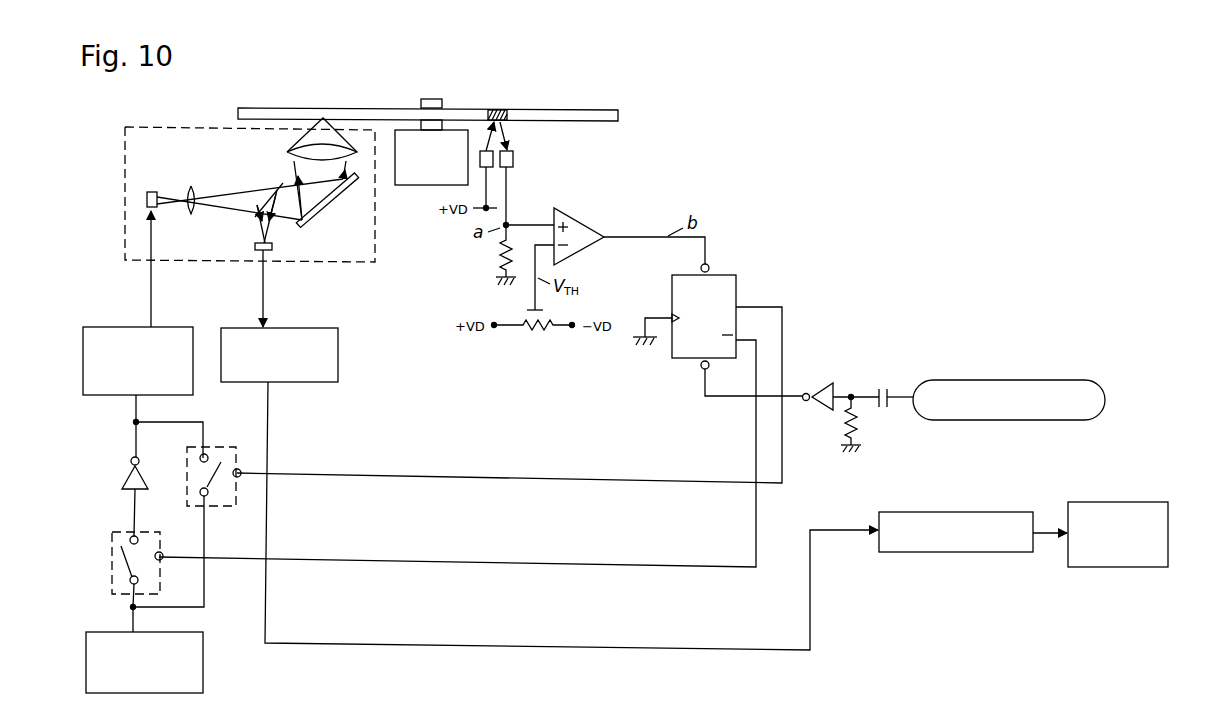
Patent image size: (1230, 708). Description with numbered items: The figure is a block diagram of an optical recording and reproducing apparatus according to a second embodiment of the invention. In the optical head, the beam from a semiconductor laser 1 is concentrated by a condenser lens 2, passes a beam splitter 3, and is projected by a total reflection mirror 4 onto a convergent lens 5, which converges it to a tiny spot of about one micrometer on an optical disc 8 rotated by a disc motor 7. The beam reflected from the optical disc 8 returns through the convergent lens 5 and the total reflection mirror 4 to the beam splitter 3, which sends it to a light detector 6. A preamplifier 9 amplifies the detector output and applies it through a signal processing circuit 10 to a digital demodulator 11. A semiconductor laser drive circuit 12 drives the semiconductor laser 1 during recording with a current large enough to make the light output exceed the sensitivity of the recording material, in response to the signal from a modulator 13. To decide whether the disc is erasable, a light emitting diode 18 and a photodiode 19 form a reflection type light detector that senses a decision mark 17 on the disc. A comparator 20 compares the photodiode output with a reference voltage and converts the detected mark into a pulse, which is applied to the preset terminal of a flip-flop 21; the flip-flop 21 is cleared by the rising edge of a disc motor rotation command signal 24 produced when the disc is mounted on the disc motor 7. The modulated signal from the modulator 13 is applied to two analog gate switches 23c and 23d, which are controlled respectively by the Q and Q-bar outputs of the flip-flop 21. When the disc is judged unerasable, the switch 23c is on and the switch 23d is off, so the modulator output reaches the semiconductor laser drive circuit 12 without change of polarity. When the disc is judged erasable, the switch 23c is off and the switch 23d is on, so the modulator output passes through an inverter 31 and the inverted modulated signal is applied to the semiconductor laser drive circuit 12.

The semiconductor laser 1 is at (151, 191).
The condenser lens 2 is at (188, 186).
The beam splitter 3 is at (283, 185).
The total reflection mirror 4 is at (328, 205).
The convergent lens 5 is at (289, 152).
The light detector 6 is at (255, 246).
The disc motor 7 is at (406, 186).
The optical disc 8 is at (350, 108).
The preamplifier 9 is at (323, 333).
The signal processing circuit 10 is at (1003, 552).
The digital demodulator 11 is at (1168, 565).
The semiconductor laser drive circuit 12 is at (85, 340).
The modulator 13 is at (85, 647).
The decision mark 17 is at (505, 122).
The light emitting diode 18 is at (495, 175).
The photodiode 19 is at (513, 151).
The comparator 20 is at (587, 221).
The flip-flop 21 is at (737, 276).
The analog gate switch 23c is at (236, 449).
The analog gate switch 23d is at (112, 558).
The disc motor rotation command signal 24 is at (1065, 387).
The inverter 31 is at (126, 477).